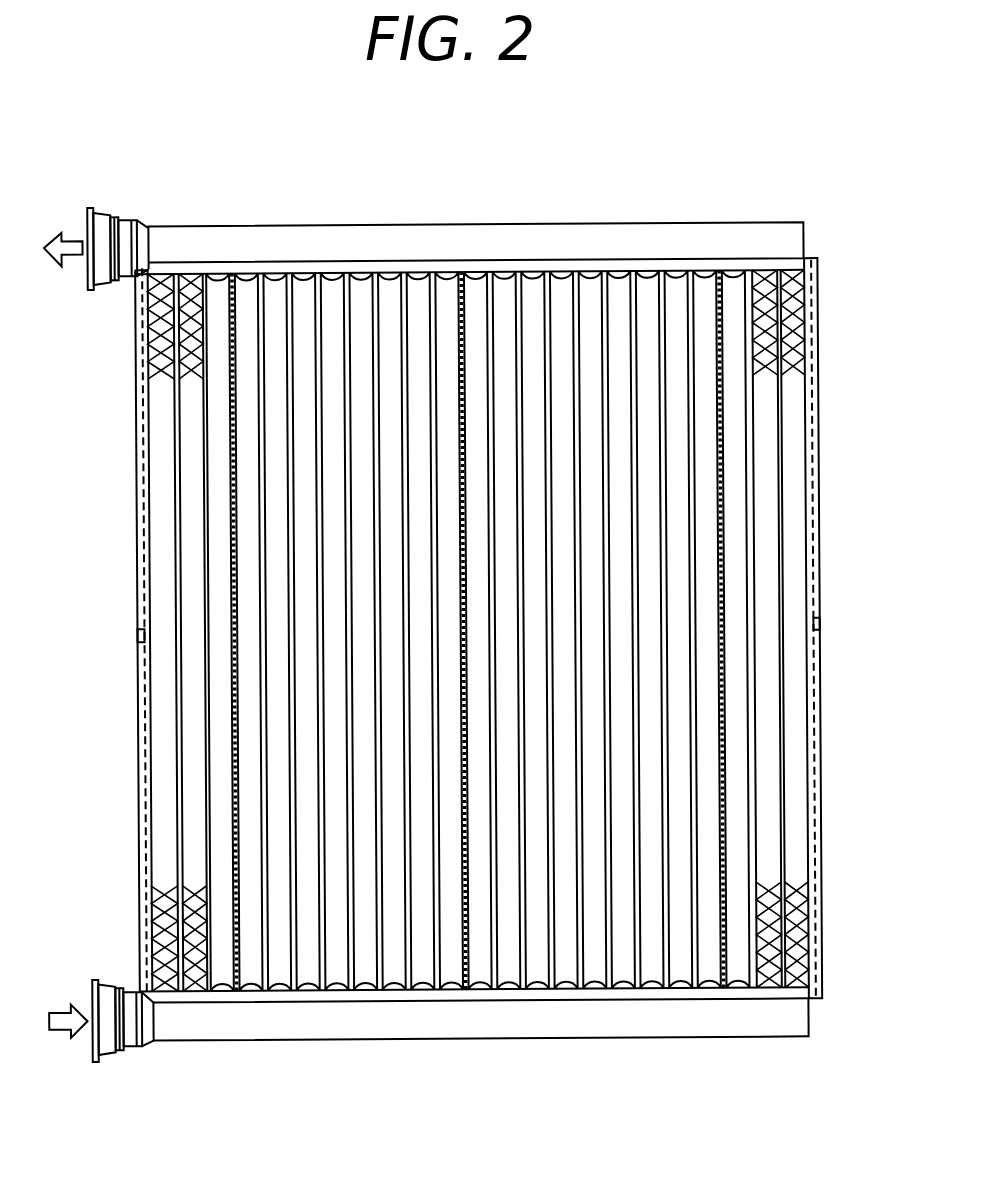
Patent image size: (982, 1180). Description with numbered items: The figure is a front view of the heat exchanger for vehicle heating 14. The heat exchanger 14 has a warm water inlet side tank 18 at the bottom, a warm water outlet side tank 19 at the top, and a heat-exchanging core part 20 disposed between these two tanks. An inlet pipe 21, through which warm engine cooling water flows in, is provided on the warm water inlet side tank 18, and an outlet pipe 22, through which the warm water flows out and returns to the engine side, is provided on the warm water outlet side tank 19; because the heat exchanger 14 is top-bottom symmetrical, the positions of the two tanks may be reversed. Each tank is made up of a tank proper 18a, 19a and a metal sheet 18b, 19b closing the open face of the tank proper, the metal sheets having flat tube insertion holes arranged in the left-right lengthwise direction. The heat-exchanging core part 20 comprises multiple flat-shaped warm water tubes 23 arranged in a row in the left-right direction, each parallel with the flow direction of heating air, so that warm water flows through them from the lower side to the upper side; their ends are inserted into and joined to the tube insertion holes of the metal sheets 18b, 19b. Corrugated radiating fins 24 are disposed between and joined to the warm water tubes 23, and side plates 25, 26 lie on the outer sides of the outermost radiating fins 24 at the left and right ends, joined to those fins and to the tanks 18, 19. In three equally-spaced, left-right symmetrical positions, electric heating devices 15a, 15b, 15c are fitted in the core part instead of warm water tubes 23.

The heat exchanger for vehicle heating 14 is at (136, 518).
The electric heating device 15a is at (234, 680).
The electric heating device 15b is at (465, 311).
The electric heating device 15c is at (723, 718).
The warm water inlet side tank 18 is at (372, 1040).
The tank proper 18a is at (276, 1022).
The metal sheet 18b is at (447, 996).
The warm water outlet side tank 19 is at (361, 219).
The tank proper 19a is at (280, 236).
The metal sheet 19b is at (413, 266).
The heat-exchanging core part 20 is at (289, 592).
The inlet pipe 21 is at (103, 1058).
The outlet pipe 22 is at (93, 205).
The warm water tube 23 is at (205, 731).
The radiating fin 24 is at (187, 886).
The side plate 25 is at (138, 381).
The side plate 26 is at (820, 818).